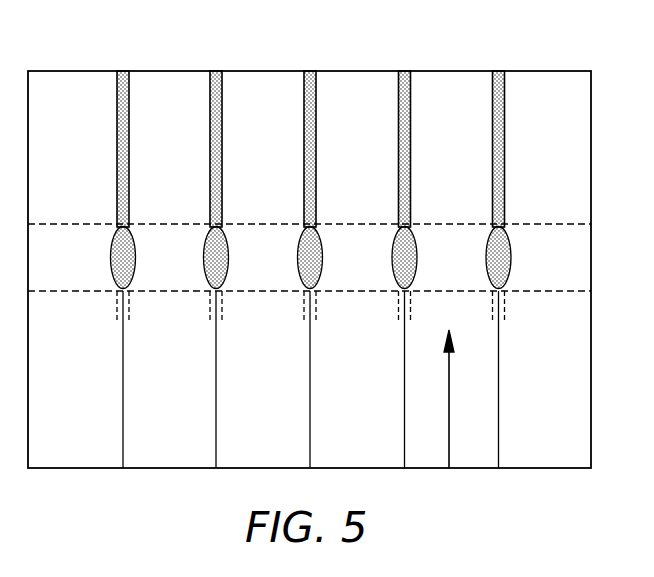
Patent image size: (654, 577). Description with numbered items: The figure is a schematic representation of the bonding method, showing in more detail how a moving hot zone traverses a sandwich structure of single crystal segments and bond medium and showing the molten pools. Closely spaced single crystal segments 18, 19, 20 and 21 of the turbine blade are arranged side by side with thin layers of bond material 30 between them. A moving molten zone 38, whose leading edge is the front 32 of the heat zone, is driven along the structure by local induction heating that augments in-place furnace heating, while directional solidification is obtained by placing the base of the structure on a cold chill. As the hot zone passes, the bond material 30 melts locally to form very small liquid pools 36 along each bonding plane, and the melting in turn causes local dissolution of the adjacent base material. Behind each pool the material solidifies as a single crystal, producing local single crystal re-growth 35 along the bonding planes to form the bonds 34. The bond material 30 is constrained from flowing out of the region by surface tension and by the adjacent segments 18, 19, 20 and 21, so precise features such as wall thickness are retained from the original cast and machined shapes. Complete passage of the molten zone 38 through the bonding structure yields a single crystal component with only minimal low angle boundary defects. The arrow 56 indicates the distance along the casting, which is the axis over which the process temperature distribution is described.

The segment 18 is at (157, 85).
The segment 19 is at (258, 85).
The segment 20 is at (351, 85).
The segment 21 is at (441, 85).
The bond material 30 is at (304, 152).
The front of the heat zone 32 is at (352, 224).
The bond plane 34 is at (310, 413).
The local single crystal re-growth 35 is at (316, 318).
The liquid pool 36 is at (392, 265).
The molten zone 38 is at (570, 257).
The distance along the casting 56 is at (449, 416).